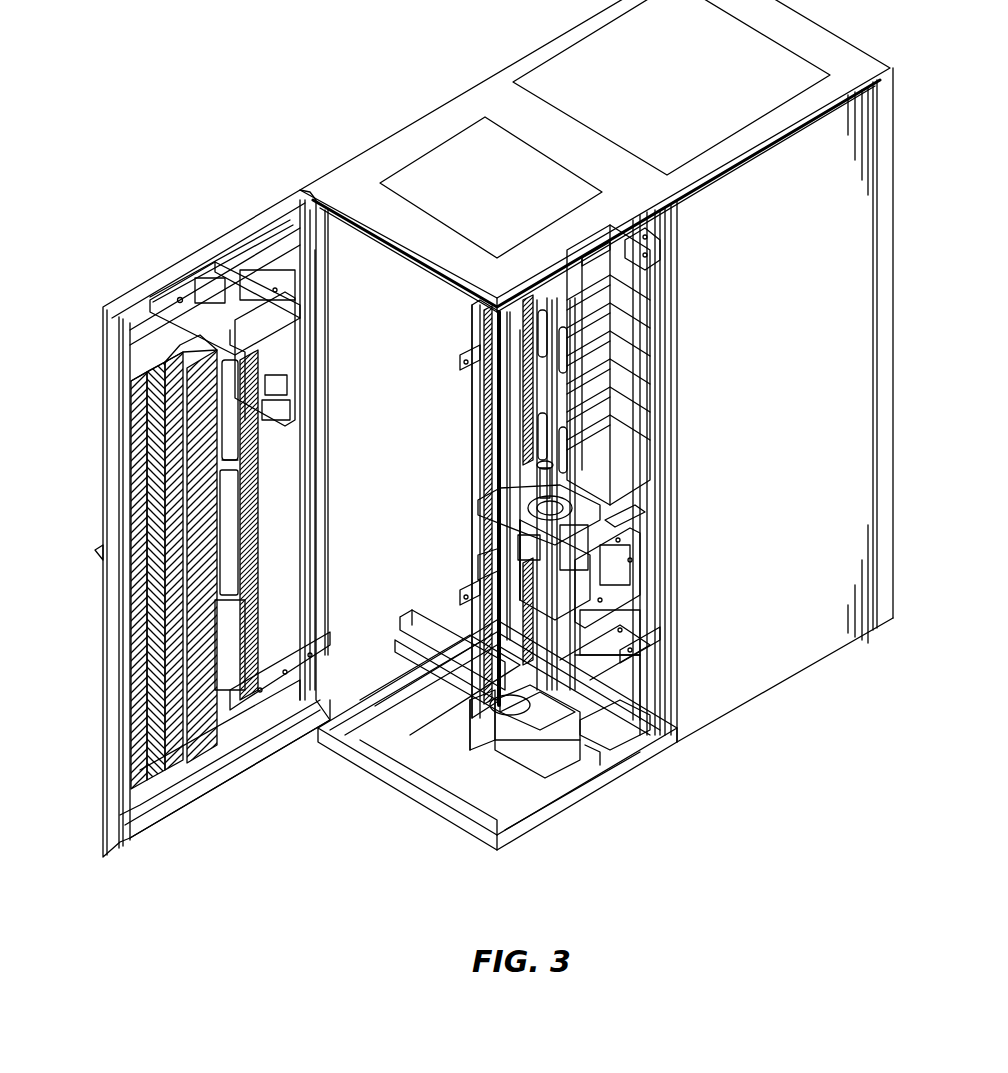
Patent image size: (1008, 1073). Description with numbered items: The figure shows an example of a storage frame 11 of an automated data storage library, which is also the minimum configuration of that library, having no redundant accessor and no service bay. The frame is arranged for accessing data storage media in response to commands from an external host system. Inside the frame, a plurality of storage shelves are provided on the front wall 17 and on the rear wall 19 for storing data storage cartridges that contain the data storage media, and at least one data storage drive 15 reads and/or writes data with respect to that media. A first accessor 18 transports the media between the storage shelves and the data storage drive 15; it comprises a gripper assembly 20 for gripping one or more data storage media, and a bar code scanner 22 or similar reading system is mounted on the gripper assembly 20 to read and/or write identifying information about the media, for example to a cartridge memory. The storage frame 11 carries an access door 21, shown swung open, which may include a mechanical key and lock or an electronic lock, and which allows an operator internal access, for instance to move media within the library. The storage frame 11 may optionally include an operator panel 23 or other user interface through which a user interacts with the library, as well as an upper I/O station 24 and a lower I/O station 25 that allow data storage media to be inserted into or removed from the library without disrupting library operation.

The storage frame 11 is at (396, 853).
The data storage drive 15 is at (623, 297).
The front wall 17 is at (115, 516).
The first accessor 18 is at (528, 735).
The rear wall 19 is at (472, 343).
The gripper assembly 20 is at (617, 527).
The door 21 is at (214, 510).
The bar code scanner 22 is at (515, 560).
The operator panel 23 is at (278, 308).
The upper I/O station 24 is at (275, 360).
The lower I/O station 25 is at (258, 583).